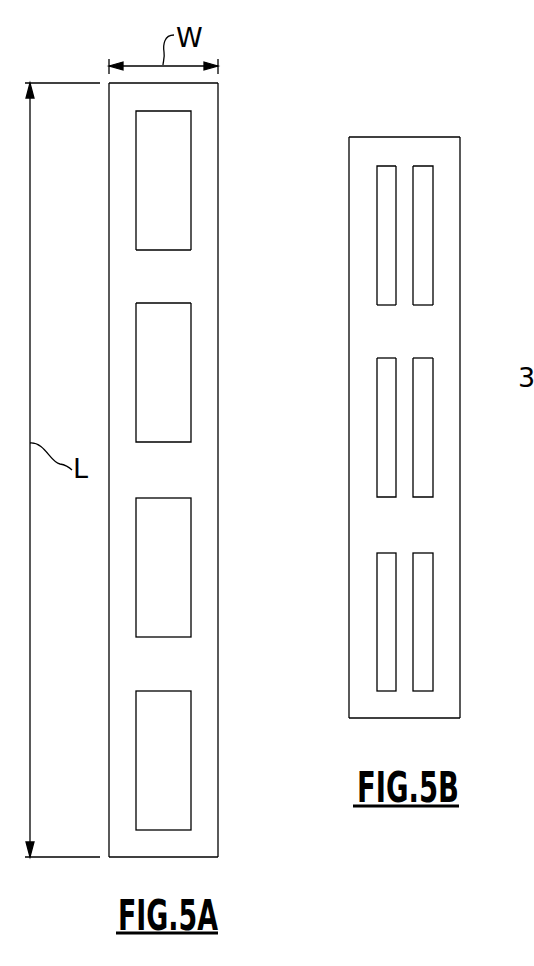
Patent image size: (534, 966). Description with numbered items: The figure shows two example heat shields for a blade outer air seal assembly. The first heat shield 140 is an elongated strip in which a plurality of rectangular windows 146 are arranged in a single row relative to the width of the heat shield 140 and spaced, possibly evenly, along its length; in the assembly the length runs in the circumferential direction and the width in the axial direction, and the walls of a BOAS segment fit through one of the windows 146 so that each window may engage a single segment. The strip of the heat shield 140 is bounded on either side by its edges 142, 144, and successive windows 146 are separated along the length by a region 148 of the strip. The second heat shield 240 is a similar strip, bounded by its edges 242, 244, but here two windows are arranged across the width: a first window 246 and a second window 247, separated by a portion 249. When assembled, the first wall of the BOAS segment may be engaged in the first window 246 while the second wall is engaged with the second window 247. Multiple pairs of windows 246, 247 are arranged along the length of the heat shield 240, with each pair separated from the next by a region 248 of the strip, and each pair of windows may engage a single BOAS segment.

In FIG. 5A, the heat shield 140 is at (232, 90).
In FIG. 5A, the first side edge of panel 142 is at (109, 297).
In FIG. 5A, the second side edge of panel 144 is at (218, 277).
In FIG. 5A, the windows 146 is at (178, 382).
In FIG. 5A, the web between apertures 148 is at (153, 263).
In FIG. 5B, the heat shield 240 is at (449, 123).
In FIG. 5B, the first side edge of panel 242 is at (358, 510).
In FIG. 5B, the second side edge of panel 244 is at (460, 522).
In FIG. 5B, the first window 246 is at (388, 417).
In FIG. 5B, the second window 247 is at (420, 420).
In FIG. 5B, the web between slot rows 248 is at (410, 315).
In FIG. 5B, the portion 249 is at (408, 237).